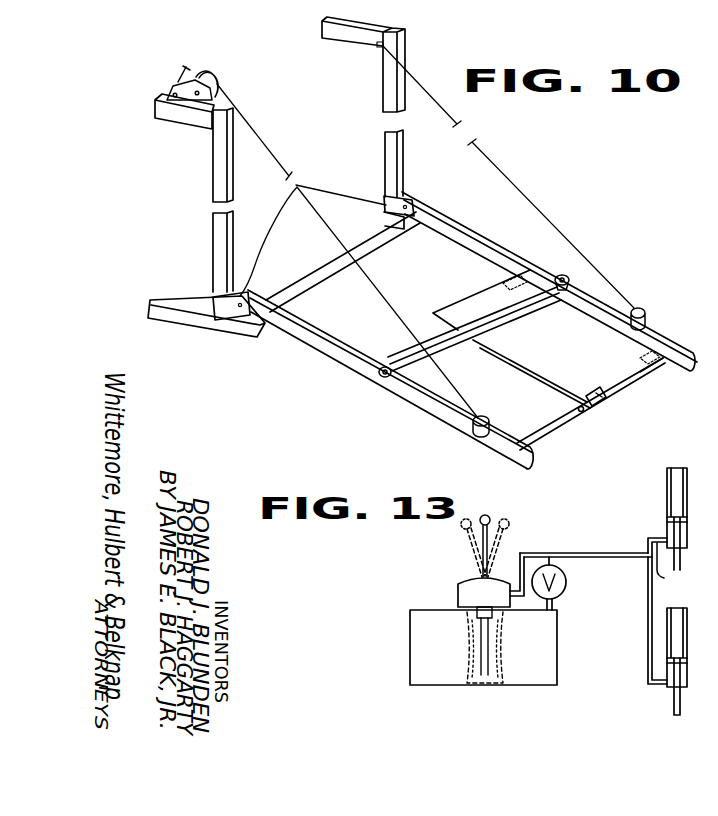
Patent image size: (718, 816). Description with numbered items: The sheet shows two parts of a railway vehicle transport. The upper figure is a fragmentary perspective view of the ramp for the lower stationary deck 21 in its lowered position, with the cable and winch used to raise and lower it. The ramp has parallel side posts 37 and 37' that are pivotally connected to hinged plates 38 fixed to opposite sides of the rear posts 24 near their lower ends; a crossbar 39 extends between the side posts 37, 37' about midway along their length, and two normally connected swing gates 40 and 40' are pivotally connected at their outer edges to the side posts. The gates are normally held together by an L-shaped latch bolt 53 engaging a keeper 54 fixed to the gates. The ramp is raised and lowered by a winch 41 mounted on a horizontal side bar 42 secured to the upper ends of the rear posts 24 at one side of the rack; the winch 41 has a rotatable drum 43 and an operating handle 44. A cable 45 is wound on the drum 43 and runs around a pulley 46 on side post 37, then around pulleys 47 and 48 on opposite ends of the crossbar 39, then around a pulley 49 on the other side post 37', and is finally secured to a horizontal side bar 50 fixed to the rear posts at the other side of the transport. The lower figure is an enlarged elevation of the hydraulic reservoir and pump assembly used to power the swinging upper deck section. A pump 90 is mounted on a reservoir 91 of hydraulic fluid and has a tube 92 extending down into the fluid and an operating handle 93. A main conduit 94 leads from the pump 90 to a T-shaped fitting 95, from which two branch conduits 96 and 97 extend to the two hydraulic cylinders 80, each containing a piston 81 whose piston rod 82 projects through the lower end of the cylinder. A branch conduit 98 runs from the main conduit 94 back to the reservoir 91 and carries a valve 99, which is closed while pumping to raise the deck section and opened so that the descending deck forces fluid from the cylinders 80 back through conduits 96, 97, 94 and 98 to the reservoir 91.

In FIG. 10, the lower stationary deck 21 is at (170, 315).
In FIG. 10, the rear post 24 is at (220, 242).
In FIG. 10, the side post 37 is at (390, 381).
In FIG. 10, the side post 37' is at (548, 281).
In FIG. 10, the hinged plate 38 is at (390, 205).
In FIG. 10, the crossbar 39 is at (490, 320).
In FIG. 10, the swing gate 40 is at (591, 413).
In FIG. 10, the swing gate 40' is at (659, 380).
In FIG. 10, the winch 41 is at (224, 76).
In FIG. 10, the horizontal side bar 42 is at (185, 115).
In FIG. 10, the rotatable drum 43 is at (203, 83).
In FIG. 10, the operating handle 44 is at (185, 80).
In FIG. 10, the cable 45 is at (310, 213).
In FIG. 10, the pulley 46 is at (488, 423).
In FIG. 10, the pulley 47 is at (380, 377).
In FIG. 10, the pulley 48 is at (562, 275).
In FIG. 10, the pulley 49 is at (641, 316).
In FIG. 10, the horizontal side bar 50 is at (362, 35).
In FIG. 10, the L-shaped latch bolt 53 is at (600, 390).
In FIG. 10, the keeper 54 is at (582, 413).
In FIG. 13, the hydraulic cylinder 80 is at (713, 457).
In FIG. 13, the piston 81 is at (688, 670).
In FIG. 13, the piston rod 82 is at (673, 697).
In FIG. 13, the pump 90 is at (465, 592).
In FIG. 13, the reservoir 91 is at (422, 637).
In FIG. 13, the tube 92 is at (488, 647).
In FIG. 13, the operating handle 93 is at (481, 559).
In FIG. 13, the main conduit 94 is at (587, 553).
In FIG. 13, the T-shaped fitting 95 is at (646, 549).
In FIG. 13, the branch conduit 96 is at (677, 570).
In FIG. 13, the branch conduit 97 is at (648, 608).
In FIG. 13, the branch conduit 98 is at (556, 561).
In FIG. 13, the valve 99 is at (566, 589).